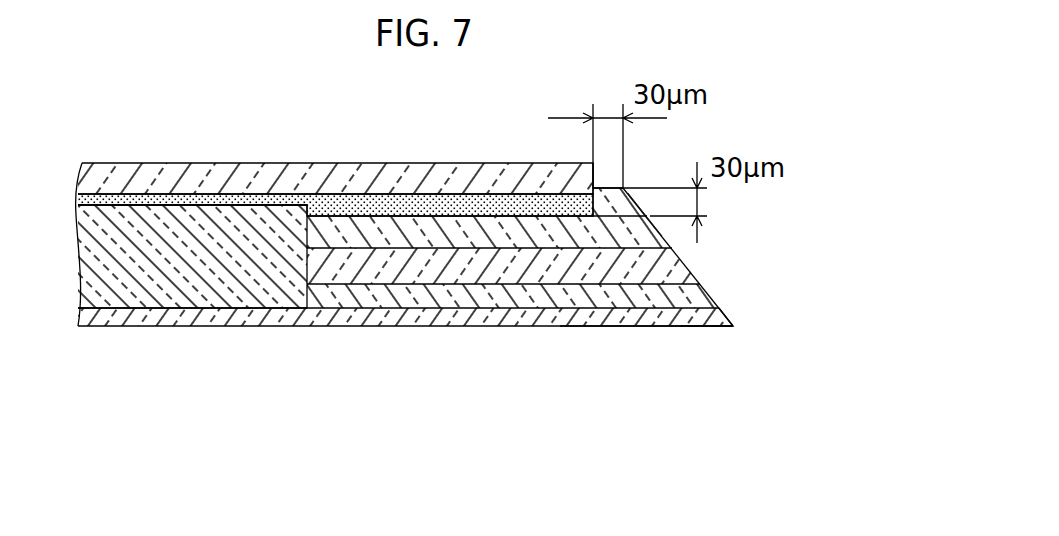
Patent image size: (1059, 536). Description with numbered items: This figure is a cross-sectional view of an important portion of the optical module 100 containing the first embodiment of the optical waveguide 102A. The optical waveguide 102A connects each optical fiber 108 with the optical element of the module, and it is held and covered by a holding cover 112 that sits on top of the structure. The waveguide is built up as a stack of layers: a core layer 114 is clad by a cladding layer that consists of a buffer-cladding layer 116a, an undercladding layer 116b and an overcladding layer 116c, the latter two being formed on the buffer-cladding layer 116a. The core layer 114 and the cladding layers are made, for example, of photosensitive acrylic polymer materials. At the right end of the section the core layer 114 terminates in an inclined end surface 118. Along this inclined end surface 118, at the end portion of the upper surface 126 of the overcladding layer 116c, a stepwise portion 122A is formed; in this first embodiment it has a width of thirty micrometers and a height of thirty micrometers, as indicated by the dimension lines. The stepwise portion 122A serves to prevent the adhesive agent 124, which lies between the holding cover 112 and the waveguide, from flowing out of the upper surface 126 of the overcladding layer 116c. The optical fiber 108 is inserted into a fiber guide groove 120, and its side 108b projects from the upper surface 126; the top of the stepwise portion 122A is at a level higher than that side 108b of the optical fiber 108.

The optical module 100 is at (252, 475).
The optical waveguide 102A is at (633, 326).
The optical fiber 108 is at (245, 288).
The side of optical fiber 108b is at (138, 210).
The holding cover 112 is at (314, 180).
The core layer 114 is at (387, 275).
The buffer-cladding layer 116a is at (707, 326).
The undercladding layer 116b is at (520, 298).
The overcladding layer 116c is at (585, 232).
The inclined end surface 118 is at (681, 272).
The fiber guide groove 120 is at (175, 312).
The stepwise portion 122A is at (627, 187).
The adhesive agent 124 is at (467, 203).
The upper surface of overcladding layer 126 is at (503, 217).